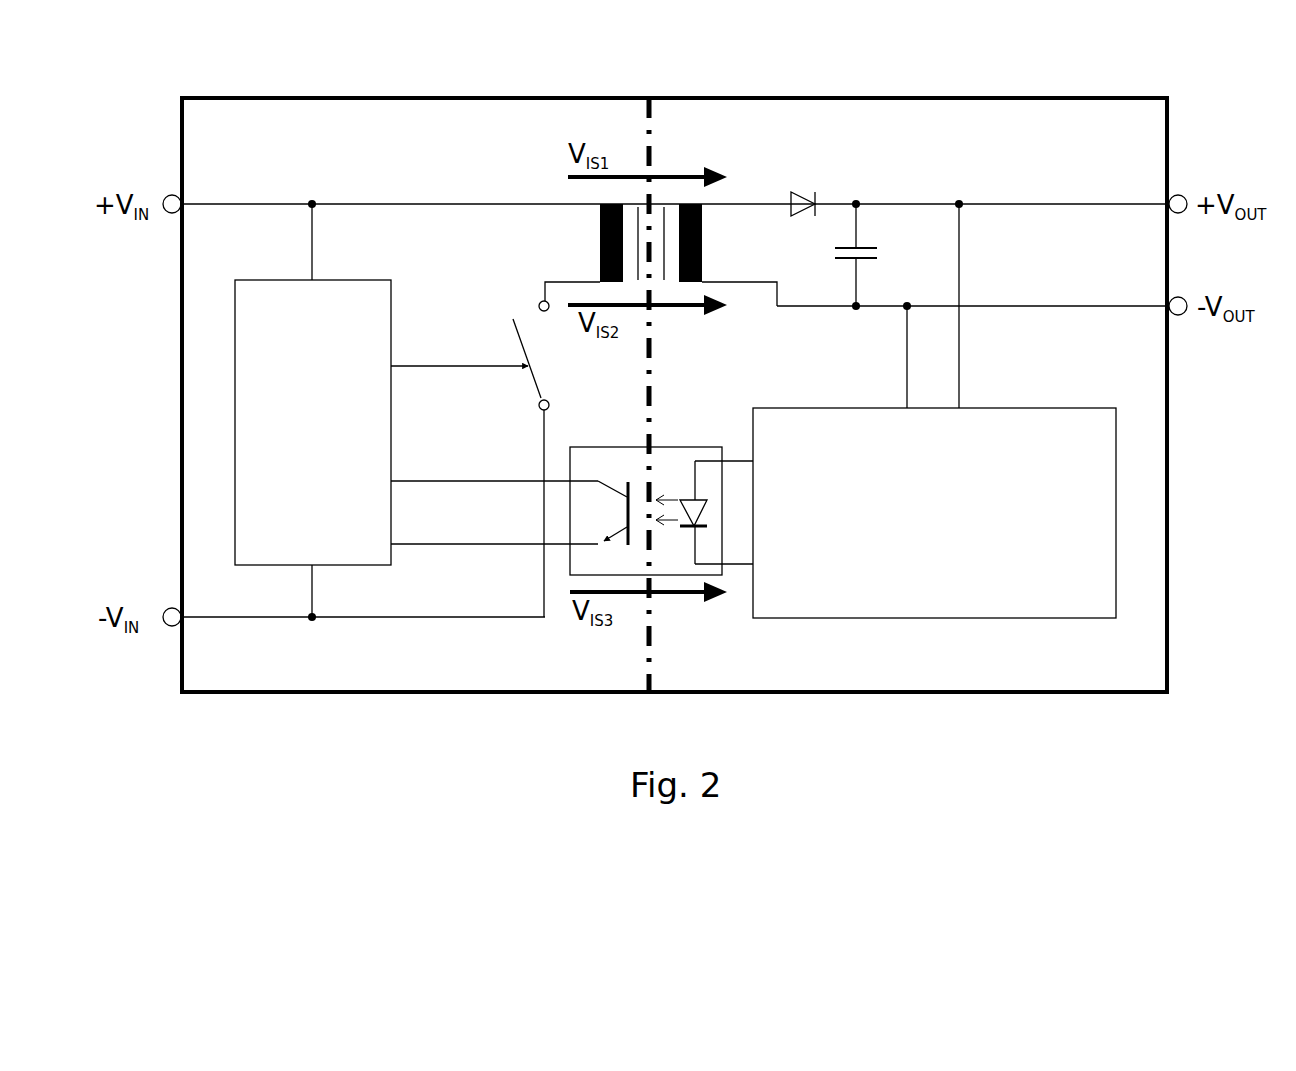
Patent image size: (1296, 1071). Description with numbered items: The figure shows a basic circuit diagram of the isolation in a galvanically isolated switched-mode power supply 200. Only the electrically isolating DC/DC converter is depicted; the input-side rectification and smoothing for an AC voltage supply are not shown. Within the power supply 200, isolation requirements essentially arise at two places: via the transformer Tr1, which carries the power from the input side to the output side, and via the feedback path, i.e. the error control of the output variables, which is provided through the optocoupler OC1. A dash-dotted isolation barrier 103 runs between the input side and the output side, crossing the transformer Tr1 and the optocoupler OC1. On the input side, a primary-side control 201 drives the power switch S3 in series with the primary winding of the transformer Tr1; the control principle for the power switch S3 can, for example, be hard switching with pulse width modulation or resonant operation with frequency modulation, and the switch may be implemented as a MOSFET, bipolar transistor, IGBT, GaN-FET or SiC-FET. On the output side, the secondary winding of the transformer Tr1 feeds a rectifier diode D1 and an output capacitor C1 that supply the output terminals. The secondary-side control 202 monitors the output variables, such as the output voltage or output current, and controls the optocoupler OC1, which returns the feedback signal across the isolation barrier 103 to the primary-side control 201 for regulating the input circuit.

The galvanically isolated switched-mode power supply 200 is at (674, 378).
The isolation barrier 103 is at (681, 395).
The primary-side controller 201 is at (313, 410).
The secondary-side control 202 is at (934, 411).
The transformer Tr1 is at (661, 255).
The diode D1 is at (804, 189).
The output capacitor C1 is at (875, 255).
The power switch S3 is at (470, 453).
The optocoupler OC1 is at (572, 496).